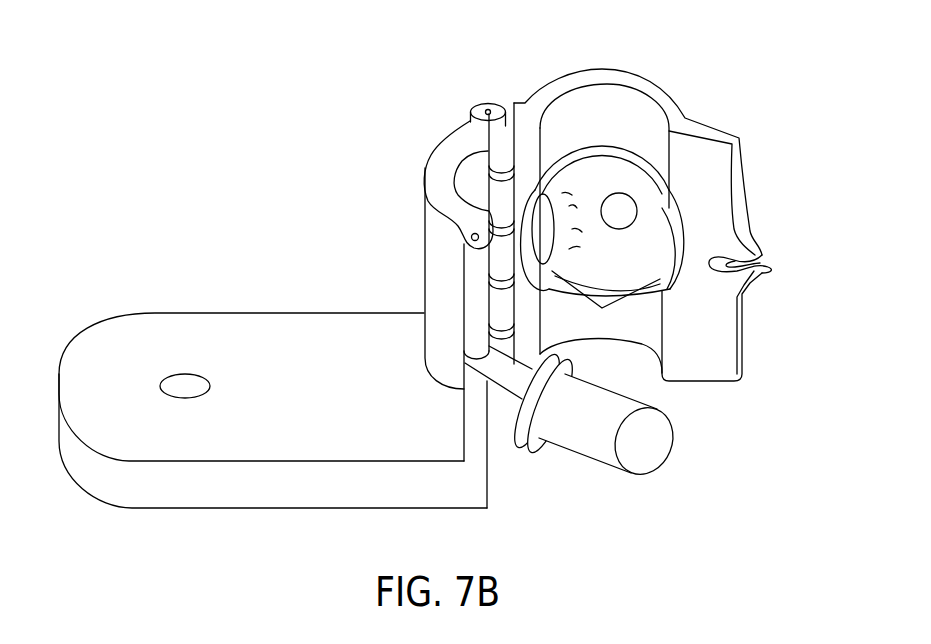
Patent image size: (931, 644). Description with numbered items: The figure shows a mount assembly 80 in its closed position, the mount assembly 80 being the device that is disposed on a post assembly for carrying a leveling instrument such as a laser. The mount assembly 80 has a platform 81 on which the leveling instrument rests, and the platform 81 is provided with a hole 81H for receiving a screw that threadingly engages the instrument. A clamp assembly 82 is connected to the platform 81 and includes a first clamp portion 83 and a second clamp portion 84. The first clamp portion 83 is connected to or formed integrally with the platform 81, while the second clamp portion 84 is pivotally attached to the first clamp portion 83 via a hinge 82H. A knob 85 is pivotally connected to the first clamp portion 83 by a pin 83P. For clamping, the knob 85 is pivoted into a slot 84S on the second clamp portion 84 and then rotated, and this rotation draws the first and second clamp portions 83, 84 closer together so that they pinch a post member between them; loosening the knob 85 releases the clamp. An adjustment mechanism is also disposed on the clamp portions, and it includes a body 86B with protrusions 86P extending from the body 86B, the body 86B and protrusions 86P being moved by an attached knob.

The mount assembly 80 is at (261, 524).
The platform 81 is at (283, 320).
The hole 81H is at (184, 387).
The clamp assembly 82 is at (665, 65).
The hinge 82H is at (485, 108).
The first clamp portion 83 is at (438, 158).
The pin 83P is at (468, 238).
The second clamp portion 84 is at (613, 78).
The slot 84S is at (770, 258).
The knob 85 is at (590, 448).
The body 86B is at (600, 160).
The protrusions 86P is at (600, 307).